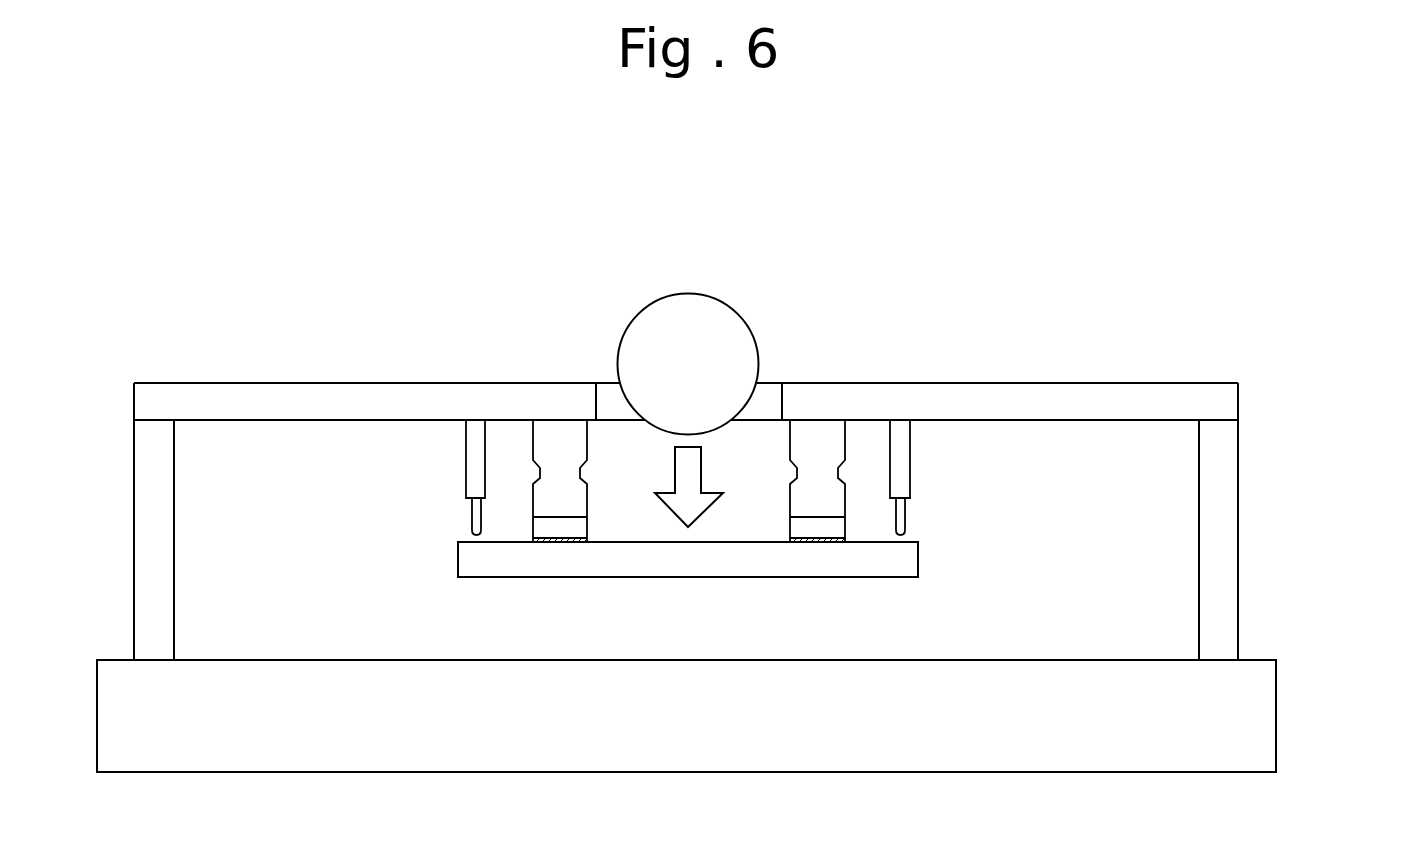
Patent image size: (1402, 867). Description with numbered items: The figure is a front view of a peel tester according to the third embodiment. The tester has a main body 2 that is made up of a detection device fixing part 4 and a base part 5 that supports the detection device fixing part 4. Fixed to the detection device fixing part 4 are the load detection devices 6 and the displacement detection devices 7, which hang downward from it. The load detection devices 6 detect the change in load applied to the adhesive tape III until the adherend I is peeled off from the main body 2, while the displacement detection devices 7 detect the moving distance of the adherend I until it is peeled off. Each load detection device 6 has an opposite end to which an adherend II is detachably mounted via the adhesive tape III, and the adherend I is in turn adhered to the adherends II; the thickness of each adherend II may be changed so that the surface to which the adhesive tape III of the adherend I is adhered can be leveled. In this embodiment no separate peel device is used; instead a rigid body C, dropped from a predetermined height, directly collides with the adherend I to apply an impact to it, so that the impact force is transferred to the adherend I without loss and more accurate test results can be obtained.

The main body 2 is at (758, 521).
The detection device fixing part 4 is at (1223, 403).
The base part 5 is at (1352, 435).
The load detection device 6 is at (828, 455).
The displacement detection device 7 is at (905, 480).
The rigid body C is at (693, 310).
The adherend I is at (473, 562).
The adherend II is at (798, 528).
The adhesive tape III is at (820, 543).